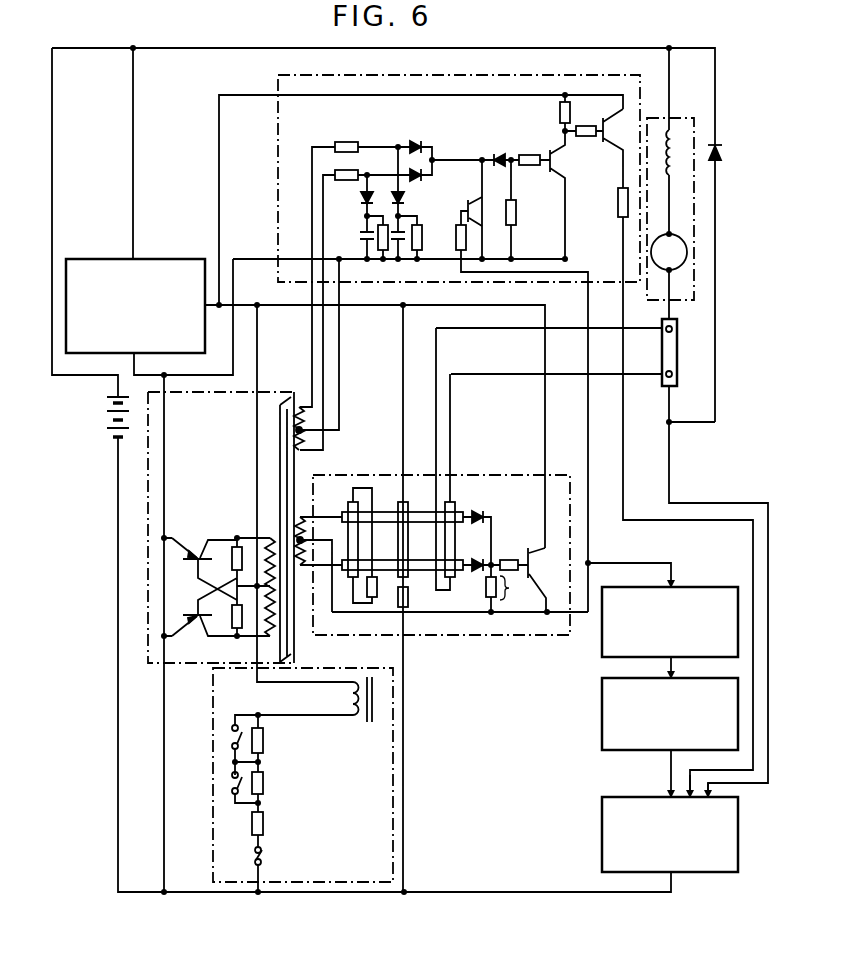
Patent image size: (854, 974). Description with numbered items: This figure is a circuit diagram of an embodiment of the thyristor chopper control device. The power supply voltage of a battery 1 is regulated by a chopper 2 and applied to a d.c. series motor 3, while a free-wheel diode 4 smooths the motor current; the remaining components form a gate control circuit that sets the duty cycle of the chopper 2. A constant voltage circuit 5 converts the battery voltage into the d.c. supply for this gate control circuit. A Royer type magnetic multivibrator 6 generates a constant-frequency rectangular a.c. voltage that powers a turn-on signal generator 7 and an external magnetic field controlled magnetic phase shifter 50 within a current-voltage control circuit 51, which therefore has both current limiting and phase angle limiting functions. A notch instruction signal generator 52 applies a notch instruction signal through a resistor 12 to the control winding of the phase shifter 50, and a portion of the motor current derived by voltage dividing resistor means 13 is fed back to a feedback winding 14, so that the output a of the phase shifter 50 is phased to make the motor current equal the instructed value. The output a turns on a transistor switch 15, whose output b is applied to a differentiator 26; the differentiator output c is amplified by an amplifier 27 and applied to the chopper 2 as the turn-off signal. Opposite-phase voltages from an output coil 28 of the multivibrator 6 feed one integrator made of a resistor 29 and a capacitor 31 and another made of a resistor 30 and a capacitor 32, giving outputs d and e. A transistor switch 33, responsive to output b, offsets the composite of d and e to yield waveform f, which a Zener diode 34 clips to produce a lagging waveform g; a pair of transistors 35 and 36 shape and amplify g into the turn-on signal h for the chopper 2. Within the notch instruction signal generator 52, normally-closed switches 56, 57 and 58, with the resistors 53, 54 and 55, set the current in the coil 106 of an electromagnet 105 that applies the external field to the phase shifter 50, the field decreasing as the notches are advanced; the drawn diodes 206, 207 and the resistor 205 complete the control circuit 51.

The battery 1 is at (108, 414).
The chopper 2 is at (602, 864).
The d.c. series motor 3 is at (687, 118).
The free-wheel diode 4 is at (732, 152).
The constant voltage circuit 5 is at (196, 259).
The magnetic multivibrator 6 is at (158, 663).
The turn-on signal generator 7 is at (278, 168).
The resistor 12 is at (408, 603).
The voltage dividing resistor means 13 is at (678, 366).
The feedback winding 14 is at (476, 515).
The transistor switch 15 is at (536, 552).
The differentiator 26 is at (601, 650).
The amplifier 27 is at (601, 714).
The output coil 28 is at (304, 436).
The resistor 29 is at (336, 172).
The resistor 30 is at (346, 141).
The capacitor 31 is at (362, 236).
The capacitor 32 is at (406, 228).
The transistor switch 33 is at (478, 208).
The Zener diode 34 is at (496, 155).
The transistor 35 is at (566, 174).
The transistor 36 is at (616, 144).
The external magnetic field controlled magnetic phase shifter 50 is at (437, 550).
The current-voltage control circuit 51 is at (518, 475).
The notch instruction signal generator 52 is at (392, 882).
The resistor 53 is at (264, 744).
The resistor 54 is at (264, 781).
The resistor 55 is at (264, 832).
The normally-closed switch 56 is at (232, 735).
The normally-closed switch 57 is at (232, 781).
The normally-closed switch 58 is at (256, 860).
The electromagnet 105 is at (371, 723).
The coil 106 is at (350, 702).
The resistor 205 is at (397, 588).
The diode 206 is at (486, 510).
The diode 207 is at (478, 574).
The output of the magnetic phase shifter a is at (506, 588).
The output of the transistor switch b is at (590, 561).
The output of the differentiator c is at (675, 665).
The output of the first integrator d is at (369, 173).
The output of the second integrator e is at (395, 144).
The composite offset waveform f is at (450, 158).
The Zener diode output waveform g is at (513, 158).
The turn-on signal h is at (768, 680).